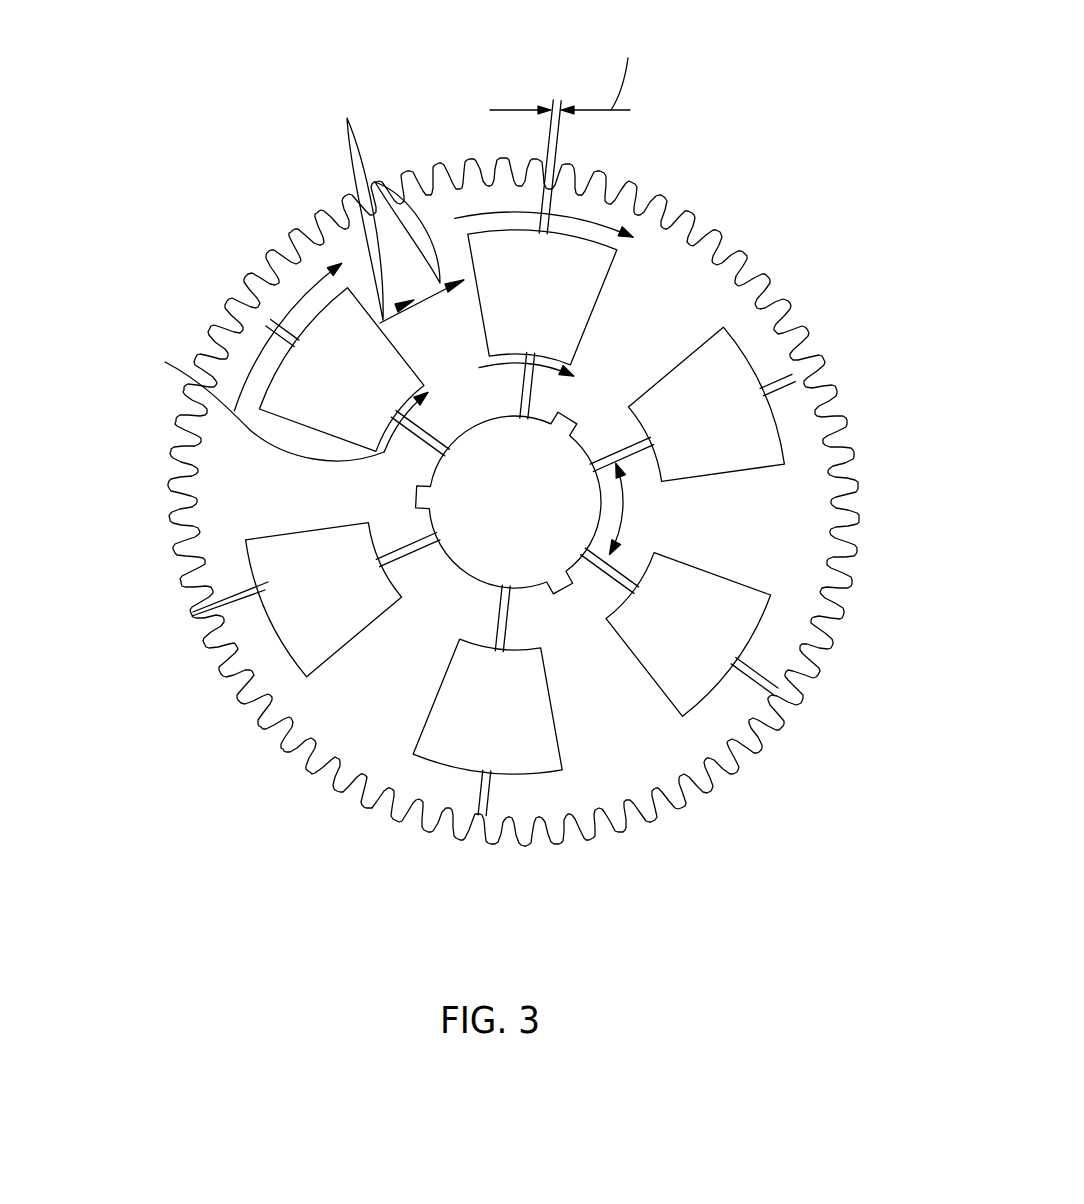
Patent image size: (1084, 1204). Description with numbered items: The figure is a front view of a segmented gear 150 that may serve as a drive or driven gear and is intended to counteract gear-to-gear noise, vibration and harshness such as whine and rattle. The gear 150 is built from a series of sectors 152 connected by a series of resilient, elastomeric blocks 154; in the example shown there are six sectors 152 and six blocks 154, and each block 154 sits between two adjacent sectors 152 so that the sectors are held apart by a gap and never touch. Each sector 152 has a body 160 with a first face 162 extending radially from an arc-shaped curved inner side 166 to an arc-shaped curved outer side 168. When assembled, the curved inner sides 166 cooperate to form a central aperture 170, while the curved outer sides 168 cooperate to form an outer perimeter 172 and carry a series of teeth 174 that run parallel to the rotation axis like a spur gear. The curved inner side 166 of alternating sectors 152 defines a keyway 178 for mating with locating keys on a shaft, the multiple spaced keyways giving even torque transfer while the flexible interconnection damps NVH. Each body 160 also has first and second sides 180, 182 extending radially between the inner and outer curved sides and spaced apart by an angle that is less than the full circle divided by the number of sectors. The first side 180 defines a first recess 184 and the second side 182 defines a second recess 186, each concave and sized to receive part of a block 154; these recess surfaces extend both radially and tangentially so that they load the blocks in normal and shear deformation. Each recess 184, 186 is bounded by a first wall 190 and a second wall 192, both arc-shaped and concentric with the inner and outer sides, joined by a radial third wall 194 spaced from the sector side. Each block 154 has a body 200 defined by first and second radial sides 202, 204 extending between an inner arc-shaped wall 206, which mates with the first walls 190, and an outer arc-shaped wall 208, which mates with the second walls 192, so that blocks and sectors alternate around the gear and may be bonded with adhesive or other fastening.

The gear 150 is at (841, 175).
The sector 152 is at (513, 516).
The elastomeric block 154 is at (510, 572).
The body 160 is at (566, 516).
The first face 162 is at (566, 516).
The curved inner side 166 is at (508, 503).
The curved outer side 168 is at (566, 516).
The central aperture 170 is at (508, 503).
The outer perimeter 172 is at (566, 516).
The teeth 174 is at (552, 516).
The keyway 178 is at (424, 490).
The first side 180 is at (576, 513).
The second side 182 is at (787, 687).
The first recess 184 is at (513, 516).
The second recess 186 is at (510, 541).
The first wall 190 is at (617, 598).
The second wall 192 is at (513, 516).
The third wall 194 is at (513, 516).
The body 200 is at (192, 616).
The first radial side 202 is at (293, 527).
The second radial side 204 is at (446, 541).
The inner arc-shaped wall 206 is at (446, 502).
The outer arc-shaped wall 208 is at (246, 692).